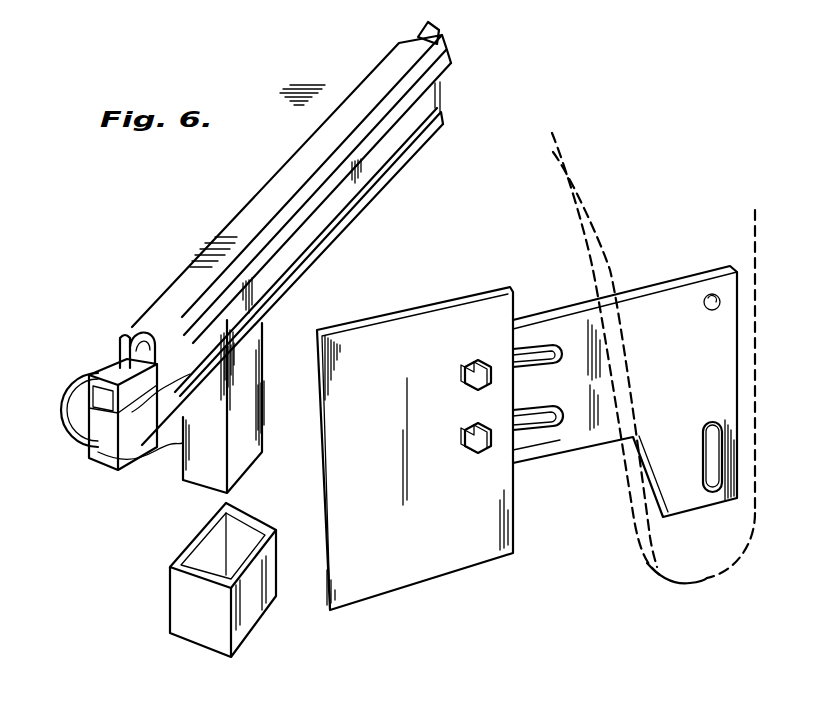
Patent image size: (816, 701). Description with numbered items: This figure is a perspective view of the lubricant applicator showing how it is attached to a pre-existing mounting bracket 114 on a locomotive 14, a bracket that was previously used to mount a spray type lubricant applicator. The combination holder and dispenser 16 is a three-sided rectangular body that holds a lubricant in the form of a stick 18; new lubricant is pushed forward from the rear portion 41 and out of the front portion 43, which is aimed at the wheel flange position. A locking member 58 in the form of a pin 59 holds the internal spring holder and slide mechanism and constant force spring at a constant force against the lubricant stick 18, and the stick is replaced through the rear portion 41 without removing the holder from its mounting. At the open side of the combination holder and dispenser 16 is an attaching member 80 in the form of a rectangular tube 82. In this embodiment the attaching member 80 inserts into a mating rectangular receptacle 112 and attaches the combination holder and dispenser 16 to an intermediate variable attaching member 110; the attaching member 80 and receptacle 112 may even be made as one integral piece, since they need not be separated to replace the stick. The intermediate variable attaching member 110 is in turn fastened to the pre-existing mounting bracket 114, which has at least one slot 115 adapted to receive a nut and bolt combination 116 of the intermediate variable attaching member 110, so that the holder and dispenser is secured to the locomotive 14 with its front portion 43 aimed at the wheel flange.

The locomotive 14 is at (742, 569).
The combination holder and dispenser 16 is at (320, 127).
The lubricant stick 18 is at (440, 128).
The rear portion 41 is at (85, 450).
The front portion 43 is at (447, 51).
The locking member 58 is at (118, 342).
The pin 59 is at (125, 343).
The attaching member 80 is at (182, 445).
The rectangular tube 82 is at (180, 478).
The intermediate variable attaching member 110 is at (382, 317).
The rectangular receptacle 112 is at (167, 597).
The pre-existing mounting bracket 114 is at (572, 302).
The slot 115 is at (530, 352).
The nut and bolt combination 116 is at (466, 360).